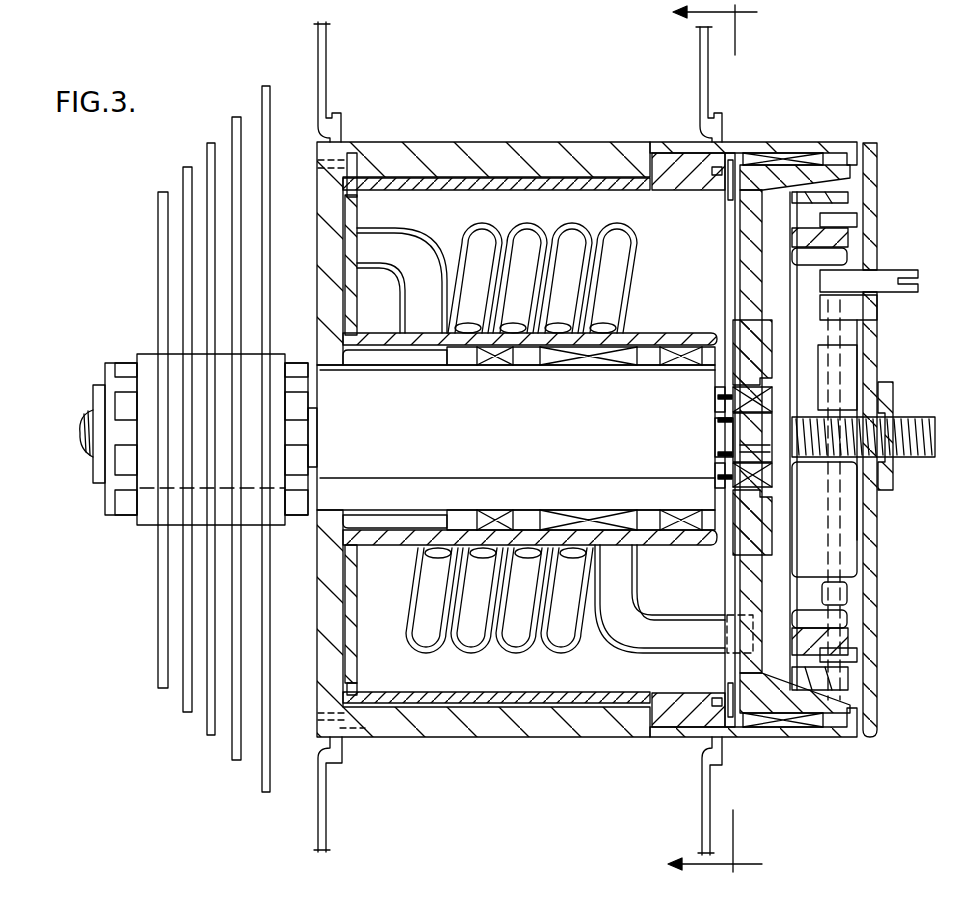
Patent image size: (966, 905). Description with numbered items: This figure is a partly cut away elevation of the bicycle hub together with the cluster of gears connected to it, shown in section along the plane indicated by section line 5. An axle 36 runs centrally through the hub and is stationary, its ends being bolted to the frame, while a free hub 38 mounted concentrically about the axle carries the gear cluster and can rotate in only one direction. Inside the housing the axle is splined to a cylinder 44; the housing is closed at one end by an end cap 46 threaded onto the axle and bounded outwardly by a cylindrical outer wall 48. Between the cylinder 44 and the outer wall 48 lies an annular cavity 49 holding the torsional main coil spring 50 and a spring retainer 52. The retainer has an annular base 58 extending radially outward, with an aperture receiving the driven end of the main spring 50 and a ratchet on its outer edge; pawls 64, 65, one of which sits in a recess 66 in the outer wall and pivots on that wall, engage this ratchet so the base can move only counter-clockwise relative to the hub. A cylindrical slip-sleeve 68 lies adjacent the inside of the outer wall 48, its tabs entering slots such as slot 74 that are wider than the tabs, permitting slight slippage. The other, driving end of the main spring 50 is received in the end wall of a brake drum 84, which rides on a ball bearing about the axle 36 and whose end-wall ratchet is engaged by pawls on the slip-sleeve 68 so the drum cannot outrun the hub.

The section line 5- 5 is at (715, 438).
The axle 36 is at (85, 412).
The free hub 38 is at (150, 352).
The cylinder 44 is at (651, 362).
The end cap 46 is at (880, 190).
The cylindrical outer wall 48 is at (476, 142).
The annular cavity 49 is at (676, 233).
The torsional main coil spring 50 is at (490, 225).
The spring retainer 52 is at (358, 598).
The annular base 58 is at (358, 205).
The pawl 64 is at (372, 142).
The pawl 65 is at (360, 716).
The recess 66 is at (318, 160).
The cylindrical slip-sleeve 68 is at (538, 186).
The slot 74 is at (671, 158).
The brake drum 84 is at (770, 195).